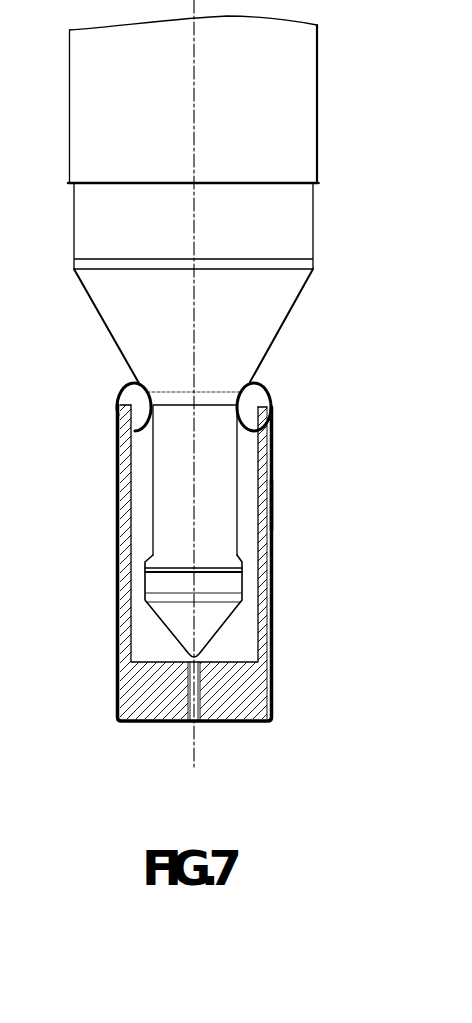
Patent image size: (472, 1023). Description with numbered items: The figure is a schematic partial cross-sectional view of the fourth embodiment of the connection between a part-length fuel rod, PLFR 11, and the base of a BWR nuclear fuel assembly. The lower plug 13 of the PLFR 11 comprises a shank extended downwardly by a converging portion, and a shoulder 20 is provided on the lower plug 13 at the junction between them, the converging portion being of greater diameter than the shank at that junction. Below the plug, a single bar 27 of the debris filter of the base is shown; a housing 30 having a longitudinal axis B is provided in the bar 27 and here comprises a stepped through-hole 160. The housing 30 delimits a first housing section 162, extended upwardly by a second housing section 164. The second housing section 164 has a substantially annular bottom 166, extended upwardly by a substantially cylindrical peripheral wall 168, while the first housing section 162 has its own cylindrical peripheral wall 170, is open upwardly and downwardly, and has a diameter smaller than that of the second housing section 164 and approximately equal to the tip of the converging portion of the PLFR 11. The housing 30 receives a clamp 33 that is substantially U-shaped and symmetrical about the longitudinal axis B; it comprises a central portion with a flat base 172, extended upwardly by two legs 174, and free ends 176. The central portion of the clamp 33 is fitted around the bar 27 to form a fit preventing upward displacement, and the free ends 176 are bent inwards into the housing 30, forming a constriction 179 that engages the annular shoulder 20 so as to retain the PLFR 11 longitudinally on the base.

The PLFR 11 is at (318, 91).
The lower plug 13 is at (240, 462).
The shoulder 20 is at (222, 563).
The bar 27 is at (118, 484).
The housing 30 is at (280, 376).
The clamp 33 is at (278, 508).
The stepped through-hole 160 is at (252, 435).
The first housing section 162 is at (160, 722).
The second housing section 164 is at (128, 553).
The bottom 166 is at (150, 662).
The peripheral wall 168 is at (125, 625).
The peripheral wall 170 is at (141, 701).
The flat base 172 is at (240, 722).
The legs 174 is at (118, 590).
The free ends 176 is at (250, 380).
The constriction 179 is at (117, 405).
The longitudinal axis B is at (206, 389).